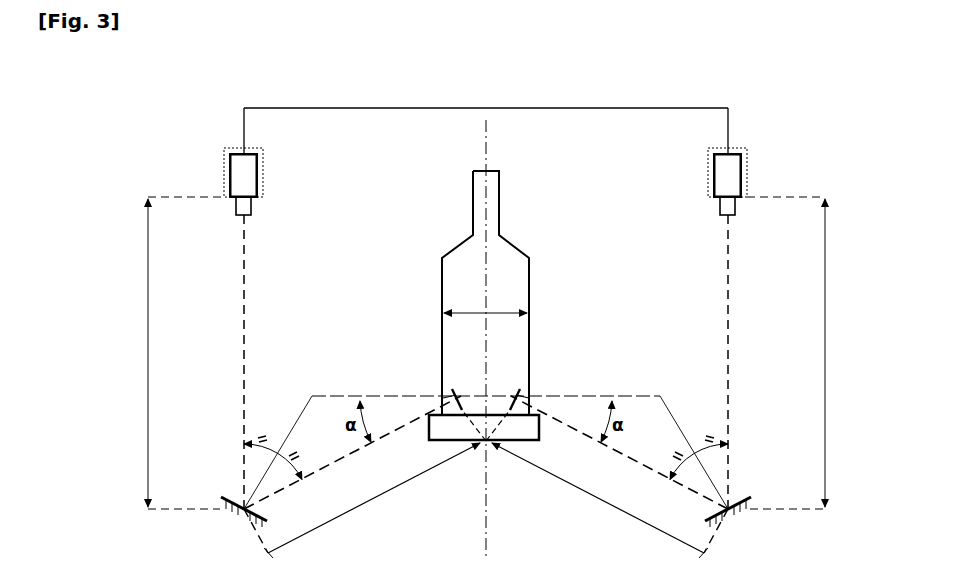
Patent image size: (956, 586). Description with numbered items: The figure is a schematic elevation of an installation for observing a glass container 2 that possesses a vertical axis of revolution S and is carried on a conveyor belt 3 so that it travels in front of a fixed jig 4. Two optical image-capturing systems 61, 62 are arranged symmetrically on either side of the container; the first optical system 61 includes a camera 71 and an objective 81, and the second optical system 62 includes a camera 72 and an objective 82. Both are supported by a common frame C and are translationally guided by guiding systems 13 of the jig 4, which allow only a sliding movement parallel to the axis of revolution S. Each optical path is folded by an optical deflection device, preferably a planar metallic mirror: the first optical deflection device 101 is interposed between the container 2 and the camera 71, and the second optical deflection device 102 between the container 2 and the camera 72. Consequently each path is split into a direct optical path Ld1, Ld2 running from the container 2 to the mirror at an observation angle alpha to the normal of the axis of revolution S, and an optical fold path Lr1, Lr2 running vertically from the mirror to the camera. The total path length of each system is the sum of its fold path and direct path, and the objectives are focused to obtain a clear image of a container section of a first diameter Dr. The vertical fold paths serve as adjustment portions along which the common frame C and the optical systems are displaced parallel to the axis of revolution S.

The guiding system 13 is at (224, 172).
The camera 71 is at (250, 160).
The first optical system 61 is at (260, 178).
The objective 81 is at (250, 205).
The camera 72 is at (721, 160).
The second optical system 62 is at (713, 178).
The objective 82 is at (721, 205).
The glass container 2 is at (501, 293).
The conveyor belt 3 is at (528, 432).
The jig 4 is at (488, 514).
The first optical deflection device 101 is at (233, 496).
The second optical deflection device 102 is at (738, 496).
The common frame C is at (394, 108).
The axis of revolution S is at (488, 141).
The first diameter Dr is at (547, 273).
The optical fold path Lr1 is at (170, 353).
The optical fold path Lr2 is at (803, 353).
The direct optical path Ld1 is at (362, 500).
The direct optical path Ld2 is at (610, 500).